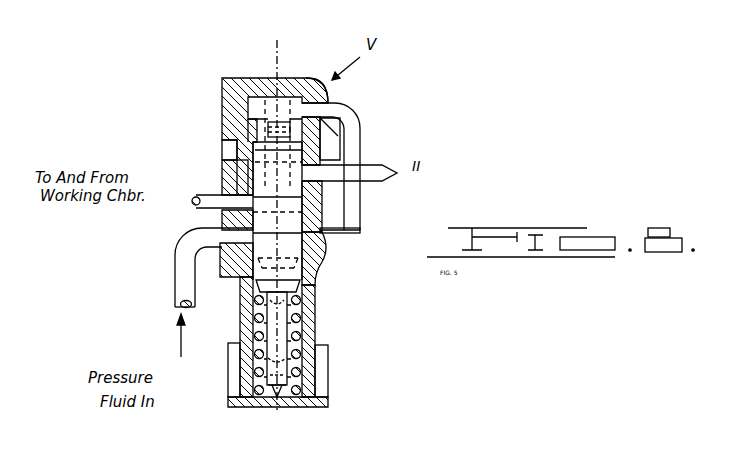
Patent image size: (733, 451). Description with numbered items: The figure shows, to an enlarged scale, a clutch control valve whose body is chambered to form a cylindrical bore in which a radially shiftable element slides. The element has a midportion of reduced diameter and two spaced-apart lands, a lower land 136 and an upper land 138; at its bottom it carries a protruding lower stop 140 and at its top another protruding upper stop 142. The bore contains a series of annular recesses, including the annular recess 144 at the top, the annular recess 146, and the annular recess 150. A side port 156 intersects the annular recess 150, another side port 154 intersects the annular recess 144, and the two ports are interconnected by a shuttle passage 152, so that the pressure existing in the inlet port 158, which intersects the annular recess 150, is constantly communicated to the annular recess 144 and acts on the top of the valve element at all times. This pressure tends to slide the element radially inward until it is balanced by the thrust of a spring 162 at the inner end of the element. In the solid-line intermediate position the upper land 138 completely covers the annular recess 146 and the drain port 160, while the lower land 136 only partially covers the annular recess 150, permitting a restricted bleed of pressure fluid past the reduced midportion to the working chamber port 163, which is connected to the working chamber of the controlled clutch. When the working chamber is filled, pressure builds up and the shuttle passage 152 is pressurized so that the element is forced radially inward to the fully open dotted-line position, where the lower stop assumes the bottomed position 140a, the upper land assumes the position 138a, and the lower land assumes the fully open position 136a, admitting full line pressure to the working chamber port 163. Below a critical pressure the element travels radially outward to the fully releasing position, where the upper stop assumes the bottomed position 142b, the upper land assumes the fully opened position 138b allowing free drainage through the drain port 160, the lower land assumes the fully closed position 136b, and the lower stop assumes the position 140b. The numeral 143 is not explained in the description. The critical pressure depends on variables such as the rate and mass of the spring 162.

The lower land 136 is at (312, 281).
The fully open position of lower land 136a is at (315, 310).
The fully closed position of lower land 136b is at (250, 128).
The upper land 138 is at (303, 192).
The position of upper land at fully open valve position 138a is at (345, 127).
The fully opened position of upper land 138b is at (297, 40).
The lower protruding stop 140 is at (275, 343).
The bottomed position of lower stop 140a is at (283, 405).
The position of lower stop at fully releasing position 140b is at (315, 378).
The upper protruding stop 142 is at (235, 115).
The bottomed position of upper stop 142b is at (276, 100).
The collar 143 is at (237, 175).
The annular recess 144 is at (260, 92).
The annular recess 146 is at (245, 165).
The annular recess 150 is at (203, 298).
The shuttle passage 152 is at (360, 213).
The side port 154 is at (326, 96).
The side port 156 is at (325, 240).
The inlet port 158 is at (218, 258).
The drain port 160 is at (310, 172).
The spring 162 is at (253, 317).
The working chamber port 163 is at (235, 210).